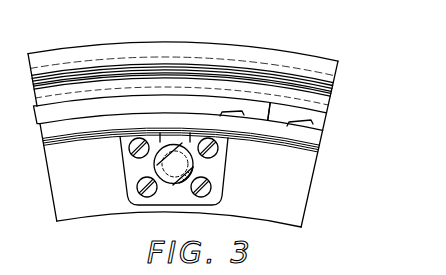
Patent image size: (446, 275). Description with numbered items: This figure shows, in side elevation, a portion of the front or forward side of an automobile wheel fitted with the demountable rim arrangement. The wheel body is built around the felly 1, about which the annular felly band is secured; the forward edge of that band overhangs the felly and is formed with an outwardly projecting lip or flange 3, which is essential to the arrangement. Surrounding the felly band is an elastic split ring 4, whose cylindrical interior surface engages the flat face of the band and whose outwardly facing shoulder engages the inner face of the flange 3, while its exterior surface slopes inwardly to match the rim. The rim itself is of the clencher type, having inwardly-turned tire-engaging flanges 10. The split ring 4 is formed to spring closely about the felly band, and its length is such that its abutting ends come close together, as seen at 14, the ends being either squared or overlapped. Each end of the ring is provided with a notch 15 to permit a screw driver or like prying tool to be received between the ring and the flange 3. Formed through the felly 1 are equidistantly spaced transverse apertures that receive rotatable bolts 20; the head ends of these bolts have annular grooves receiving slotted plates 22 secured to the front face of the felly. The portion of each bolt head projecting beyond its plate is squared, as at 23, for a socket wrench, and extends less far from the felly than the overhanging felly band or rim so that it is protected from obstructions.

The felly 1 is at (300, 206).
The tire-engaging flanges 10 is at (253, 50).
The elastic split ring 4 is at (35, 111).
The notch 15 is at (240, 110).
The abutting ends of the ring 14 is at (268, 121).
The lip or flange 3 is at (323, 140).
The slotted plates 22 is at (167, 203).
The squared portion of the bolt head 23 is at (160, 158).
The rotatable bolts 20 is at (192, 170).